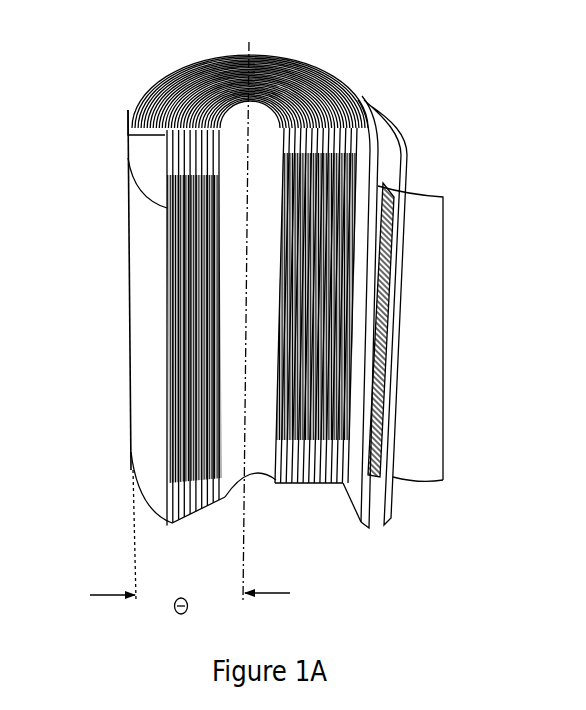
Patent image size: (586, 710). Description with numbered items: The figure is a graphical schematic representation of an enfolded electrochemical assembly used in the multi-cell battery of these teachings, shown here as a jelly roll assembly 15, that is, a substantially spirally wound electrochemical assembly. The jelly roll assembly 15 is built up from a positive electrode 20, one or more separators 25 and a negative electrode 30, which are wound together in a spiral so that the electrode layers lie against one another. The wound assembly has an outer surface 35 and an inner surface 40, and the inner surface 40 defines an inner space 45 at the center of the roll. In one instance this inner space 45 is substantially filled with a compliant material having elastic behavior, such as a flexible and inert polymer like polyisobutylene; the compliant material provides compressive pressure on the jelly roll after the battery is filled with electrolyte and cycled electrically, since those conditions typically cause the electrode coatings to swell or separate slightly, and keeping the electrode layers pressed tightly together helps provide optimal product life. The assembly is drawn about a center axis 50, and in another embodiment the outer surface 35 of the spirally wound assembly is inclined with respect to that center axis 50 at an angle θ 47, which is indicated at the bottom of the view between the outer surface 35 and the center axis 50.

The jelly roll assembly 15 is at (129, 496).
The positive electrode 20 is at (450, 312).
The separators 25 is at (461, 292).
The negative electrode 30 is at (430, 312).
The outer surface 35 is at (97, 290).
The inner surface 40 is at (297, 525).
The inner space 45 is at (231, 268).
The angle θ 47 is at (163, 566).
The center axis 50 is at (309, 310).